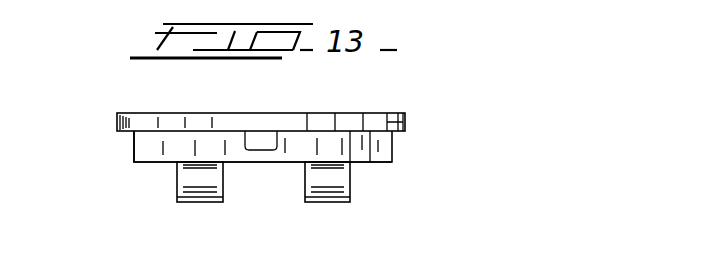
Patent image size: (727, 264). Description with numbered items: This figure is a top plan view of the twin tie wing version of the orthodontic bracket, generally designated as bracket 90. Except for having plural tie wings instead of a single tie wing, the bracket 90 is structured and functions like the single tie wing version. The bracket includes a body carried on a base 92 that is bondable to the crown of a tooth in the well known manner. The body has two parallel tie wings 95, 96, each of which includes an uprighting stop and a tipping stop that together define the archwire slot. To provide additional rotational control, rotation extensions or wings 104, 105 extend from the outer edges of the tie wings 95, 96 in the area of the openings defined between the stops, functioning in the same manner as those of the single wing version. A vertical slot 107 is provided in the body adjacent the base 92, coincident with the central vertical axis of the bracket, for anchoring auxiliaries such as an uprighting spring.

The bracket 90 is at (124, 164).
The base 92 is at (390, 121).
The tie wing 95 is at (200, 204).
The tie wing 96 is at (330, 204).
The rotation extension 104 is at (147, 163).
The rotation extension 105 is at (375, 155).
The vertical slot 107 is at (260, 142).